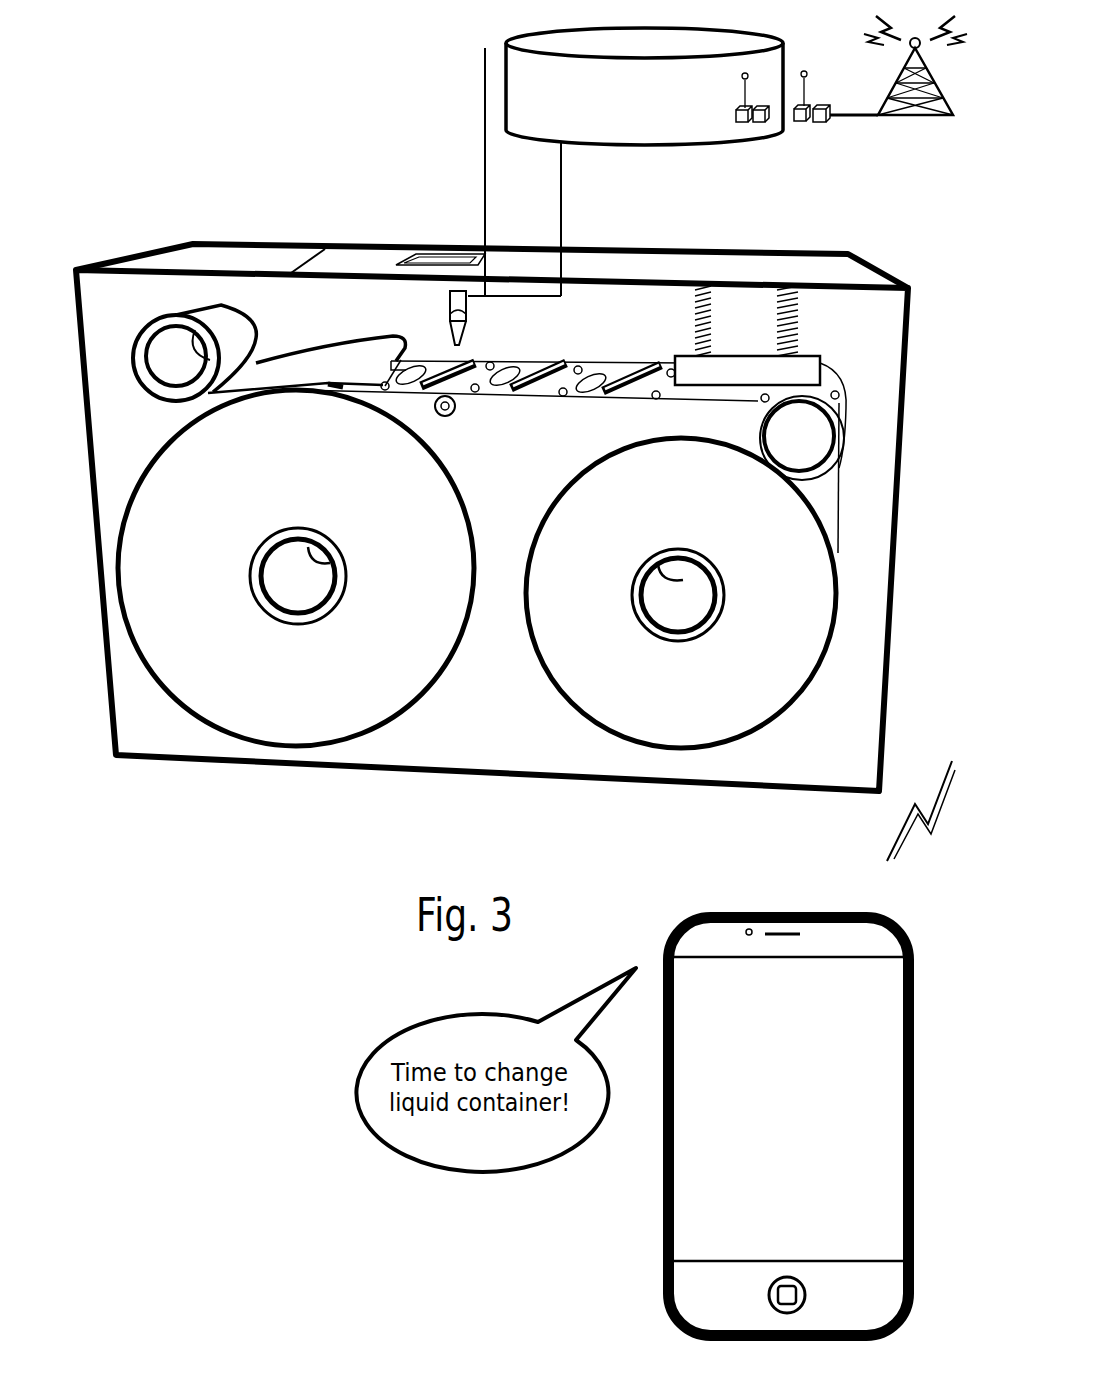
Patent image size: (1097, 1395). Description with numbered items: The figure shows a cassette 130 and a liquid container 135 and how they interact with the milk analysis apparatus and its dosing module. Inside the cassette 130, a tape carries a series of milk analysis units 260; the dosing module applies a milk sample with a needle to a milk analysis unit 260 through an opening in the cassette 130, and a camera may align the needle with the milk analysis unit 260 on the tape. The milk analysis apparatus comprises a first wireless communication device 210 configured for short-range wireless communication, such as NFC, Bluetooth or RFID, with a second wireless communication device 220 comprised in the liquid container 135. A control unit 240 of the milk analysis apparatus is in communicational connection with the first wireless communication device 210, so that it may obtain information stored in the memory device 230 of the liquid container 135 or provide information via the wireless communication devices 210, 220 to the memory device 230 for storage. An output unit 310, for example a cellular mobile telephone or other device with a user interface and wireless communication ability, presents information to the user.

The cassette 130 is at (157, 727).
The liquid container 135 is at (666, 115).
The first wireless communication device 210 is at (798, 108).
The second wireless communication device 220 is at (740, 124).
The memory device 230 is at (764, 127).
The control unit 240 is at (833, 117).
The milk analysis unit 260 is at (437, 378).
The output unit 310 is at (665, 1288).